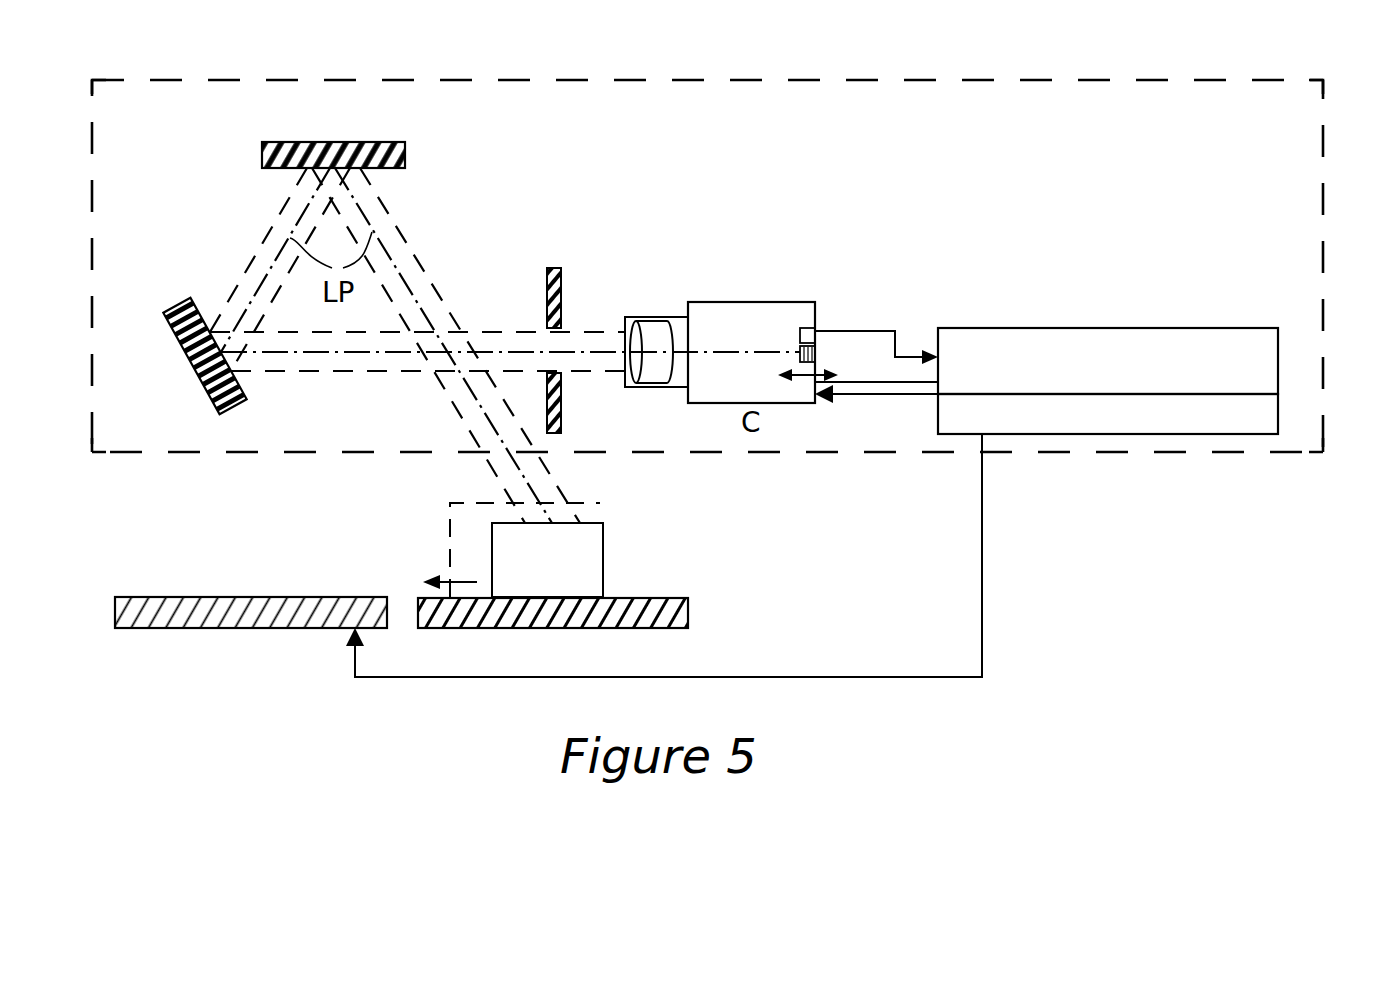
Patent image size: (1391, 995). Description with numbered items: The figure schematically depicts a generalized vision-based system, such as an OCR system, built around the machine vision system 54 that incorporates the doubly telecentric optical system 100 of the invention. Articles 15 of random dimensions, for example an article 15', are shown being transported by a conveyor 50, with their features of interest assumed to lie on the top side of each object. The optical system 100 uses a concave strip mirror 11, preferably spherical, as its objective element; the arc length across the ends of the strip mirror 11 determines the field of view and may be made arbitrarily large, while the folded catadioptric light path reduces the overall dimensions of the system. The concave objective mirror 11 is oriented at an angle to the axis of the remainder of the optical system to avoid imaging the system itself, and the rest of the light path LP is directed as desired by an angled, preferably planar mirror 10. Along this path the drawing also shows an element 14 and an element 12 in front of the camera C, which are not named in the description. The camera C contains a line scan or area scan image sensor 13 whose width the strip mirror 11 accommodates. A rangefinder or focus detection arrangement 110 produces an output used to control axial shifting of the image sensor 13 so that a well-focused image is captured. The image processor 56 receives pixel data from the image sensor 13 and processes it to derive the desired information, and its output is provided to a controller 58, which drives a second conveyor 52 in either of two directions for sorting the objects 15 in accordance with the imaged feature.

The planar mirror 10 is at (193, 372).
The concave strip mirror 11 is at (347, 140).
The lens 12 is at (652, 325).
The image sensor 13 is at (818, 356).
The aperture 14 is at (551, 266).
The articles 15 is at (583, 554).
The article of different dimensions 15' is at (551, 532).
The conveyor 50 is at (685, 596).
The second conveyor 52 is at (218, 596).
The machine vision system 54 is at (1326, 154).
The image processor 56 is at (1144, 328).
The controller 58 is at (1142, 435).
The doubly telecentric optical system 100 is at (769, 218).
The rangefinder or focus detection arrangement 110 is at (811, 327).